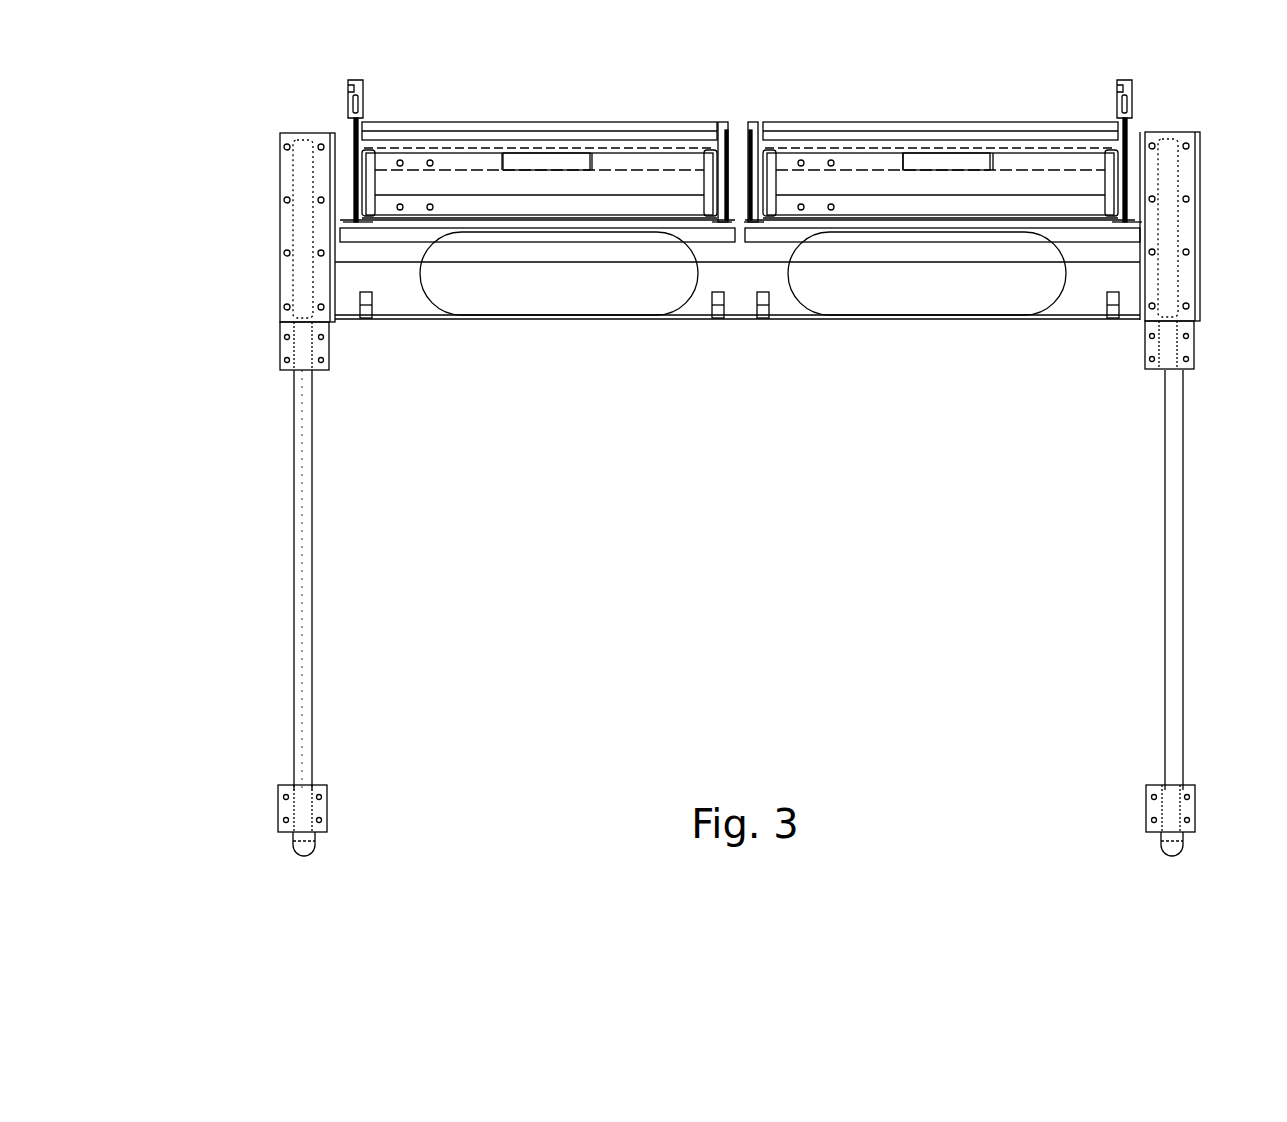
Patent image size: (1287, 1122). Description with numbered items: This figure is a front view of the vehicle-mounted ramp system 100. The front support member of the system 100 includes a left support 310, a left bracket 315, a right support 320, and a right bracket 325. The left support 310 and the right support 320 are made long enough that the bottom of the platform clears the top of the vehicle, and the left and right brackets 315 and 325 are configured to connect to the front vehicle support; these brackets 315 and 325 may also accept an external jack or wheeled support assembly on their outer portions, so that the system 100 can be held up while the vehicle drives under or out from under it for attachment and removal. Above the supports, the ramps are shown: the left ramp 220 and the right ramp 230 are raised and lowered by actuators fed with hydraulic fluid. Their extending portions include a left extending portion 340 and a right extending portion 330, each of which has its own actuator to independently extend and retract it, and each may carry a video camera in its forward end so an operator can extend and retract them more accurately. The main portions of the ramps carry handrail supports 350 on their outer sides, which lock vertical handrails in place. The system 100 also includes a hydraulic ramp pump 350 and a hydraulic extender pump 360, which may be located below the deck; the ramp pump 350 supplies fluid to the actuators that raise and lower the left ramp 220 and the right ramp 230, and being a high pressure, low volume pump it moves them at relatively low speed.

The system 100 is at (262, 406).
The left ramp 220 is at (830, 125).
The right ramp 230 is at (462, 125).
The left support 310 is at (1178, 453).
The left bracket 315 is at (1198, 808).
The right support 320 is at (304, 554).
The right bracket 325 is at (280, 812).
The right extending portion 330 is at (608, 183).
The left extending portion 340 is at (998, 183).
The handrail support 350 is at (345, 95).
The hydraulic extender pump 360 is at (902, 306).